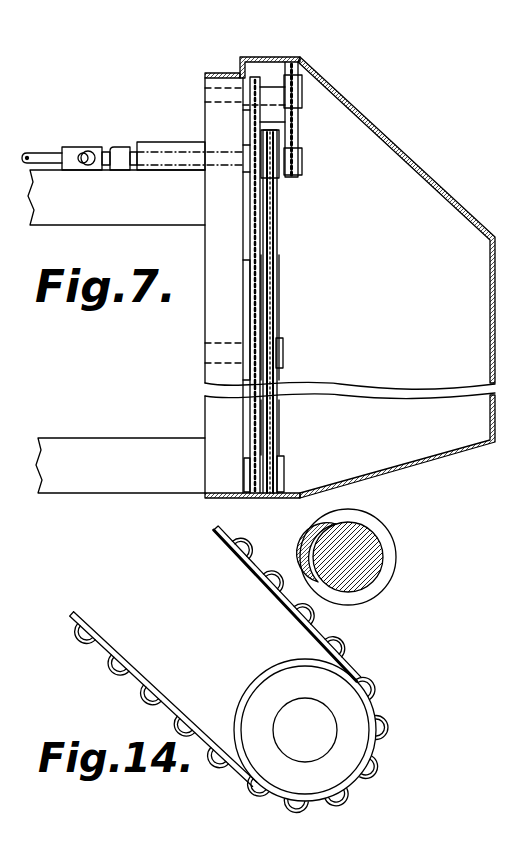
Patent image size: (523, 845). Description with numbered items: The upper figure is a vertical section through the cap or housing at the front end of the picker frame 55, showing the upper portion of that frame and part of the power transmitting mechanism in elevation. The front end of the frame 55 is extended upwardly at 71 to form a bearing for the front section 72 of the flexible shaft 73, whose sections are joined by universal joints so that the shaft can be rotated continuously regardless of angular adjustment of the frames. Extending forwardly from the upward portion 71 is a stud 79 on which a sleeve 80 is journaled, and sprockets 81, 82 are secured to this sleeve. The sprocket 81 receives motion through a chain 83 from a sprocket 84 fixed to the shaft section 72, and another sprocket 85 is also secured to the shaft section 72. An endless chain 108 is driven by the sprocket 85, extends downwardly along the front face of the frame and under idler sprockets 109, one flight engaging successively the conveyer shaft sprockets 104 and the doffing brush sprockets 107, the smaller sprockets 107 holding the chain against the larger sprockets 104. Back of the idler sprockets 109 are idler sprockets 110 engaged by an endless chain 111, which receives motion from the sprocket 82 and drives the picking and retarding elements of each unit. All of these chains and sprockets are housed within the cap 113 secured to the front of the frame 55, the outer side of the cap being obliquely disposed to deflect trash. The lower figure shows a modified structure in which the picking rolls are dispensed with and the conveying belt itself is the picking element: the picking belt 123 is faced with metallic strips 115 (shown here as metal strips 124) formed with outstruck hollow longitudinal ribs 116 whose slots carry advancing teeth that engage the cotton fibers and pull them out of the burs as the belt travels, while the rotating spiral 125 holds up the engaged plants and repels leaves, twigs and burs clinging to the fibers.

In FIG. 7, the picker frame 55 is at (173, 212).
In FIG. 7, the upwardly extended front end portion 71 is at (210, 113).
In FIG. 7, the front section of flexible shaft 72 is at (131, 150).
In FIG. 7, the flexible shaft 73 is at (38, 152).
In FIG. 7, the stud 79 is at (293, 64).
In FIG. 7, the sleeve 80 is at (270, 88).
In FIG. 7, the sprocket 81 is at (298, 76).
In FIG. 7, the sprocket 82 is at (255, 92).
In FIG. 7, the chain 83 is at (300, 130).
In FIG. 7, the sprocket 84 is at (300, 176).
In FIG. 7, the sprocket 85 is at (282, 190).
In FIG. 7, the sprocket 104 is at (280, 300).
In FIG. 7, the sprocket 107 is at (284, 355).
In FIG. 7, the endless chain 108 is at (279, 420).
In FIG. 7, the idler sprocket 109 is at (285, 466).
In FIG. 7, the idler sprocket 110 is at (246, 476).
In FIG. 7, the endless chain 111 is at (243, 325).
In FIG. 7, the cap 113 is at (350, 277).
In FIG. 14, the metallic slat or strip 115 is at (391, 755).
In FIG. 14, the hollow longitudinal rib 116 is at (386, 778).
In FIG. 14, the picking belt 123 is at (268, 595).
In FIG. 14, the metal strip 124 is at (358, 645).
In FIG. 14, the rotating spiral 125 is at (385, 543).